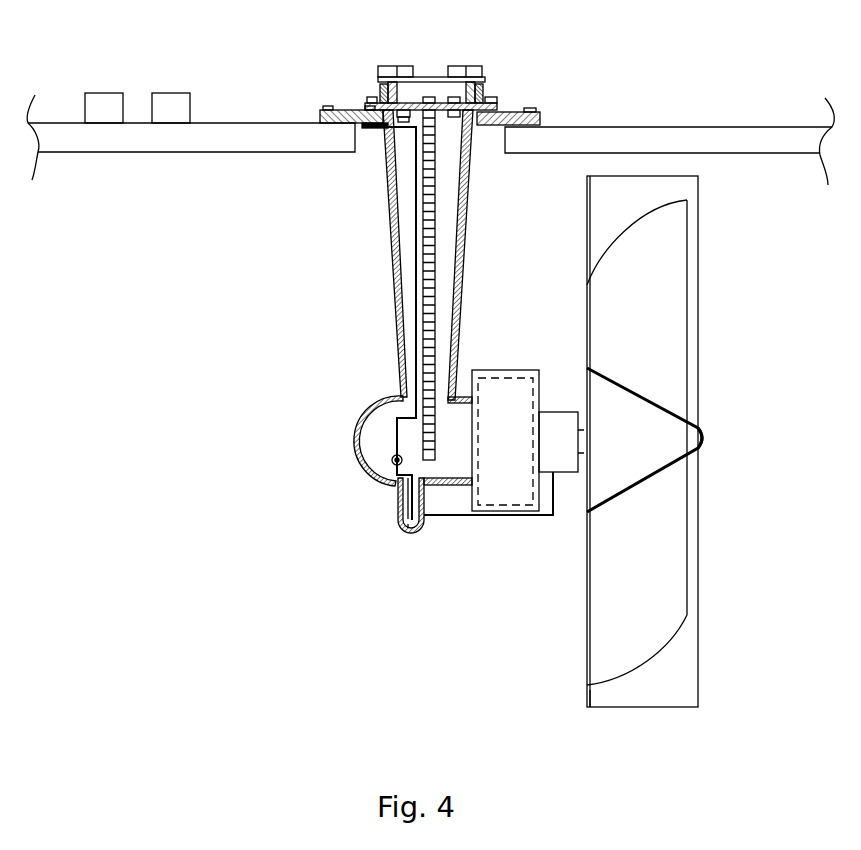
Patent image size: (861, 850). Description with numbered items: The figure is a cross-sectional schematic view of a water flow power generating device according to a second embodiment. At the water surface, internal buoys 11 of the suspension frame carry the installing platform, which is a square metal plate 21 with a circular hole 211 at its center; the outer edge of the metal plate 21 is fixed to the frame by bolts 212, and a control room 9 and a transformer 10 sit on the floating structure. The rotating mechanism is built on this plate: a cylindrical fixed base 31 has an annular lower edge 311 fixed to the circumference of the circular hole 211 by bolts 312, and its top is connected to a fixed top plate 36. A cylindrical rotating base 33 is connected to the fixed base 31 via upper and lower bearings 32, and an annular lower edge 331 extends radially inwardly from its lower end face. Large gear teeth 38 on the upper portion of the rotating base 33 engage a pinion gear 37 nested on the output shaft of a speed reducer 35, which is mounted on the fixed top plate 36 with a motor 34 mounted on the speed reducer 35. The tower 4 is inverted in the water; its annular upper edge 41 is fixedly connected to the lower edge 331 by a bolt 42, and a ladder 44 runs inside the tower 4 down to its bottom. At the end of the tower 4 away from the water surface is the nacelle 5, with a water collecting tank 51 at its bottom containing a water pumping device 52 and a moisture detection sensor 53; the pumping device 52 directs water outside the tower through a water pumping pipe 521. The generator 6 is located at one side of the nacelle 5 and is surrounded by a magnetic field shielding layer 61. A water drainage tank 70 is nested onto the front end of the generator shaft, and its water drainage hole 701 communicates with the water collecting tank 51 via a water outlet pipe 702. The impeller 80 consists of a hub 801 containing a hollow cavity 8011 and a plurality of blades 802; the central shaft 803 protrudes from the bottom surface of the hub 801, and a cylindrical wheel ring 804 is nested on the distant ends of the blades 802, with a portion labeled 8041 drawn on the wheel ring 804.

The control room 9 is at (98, 110).
The transformer 10 is at (172, 107).
The internal buoy 11 is at (292, 137).
The square metal plate 21 is at (328, 103).
The circular hole 211 is at (383, 128).
The bolt 212 is at (325, 110).
The fixed base 31 is at (380, 84).
The annular lower edge 311 is at (540, 121).
The bolt 312 is at (497, 106).
The bearing 32 is at (473, 115).
The rotating base 33 is at (392, 80).
The annular lower edge 331 is at (381, 90).
The motor 34 is at (403, 72).
The speed reducer 35 is at (472, 78).
The fixed top plate 36 is at (422, 78).
The pinion gear 37 is at (485, 82).
The large gear teeth 38 is at (480, 80).
The tower 4 is at (393, 182).
The annular upper edge 41 is at (387, 118).
The bolt 42 is at (402, 116).
The ladder 44 is at (428, 238).
The nacelle 5 is at (385, 442).
The water collecting tank 51 is at (408, 495).
The water pumping device 52 is at (393, 465).
The moisture detection sensor 53 is at (407, 530).
The water pumping pipe 521 is at (413, 279).
The generator 6 is at (493, 402).
The magnetic field shielding layer 61 is at (478, 370).
The water drainage tank 70 is at (550, 425).
The water drainage hole 701 is at (555, 474).
The water outlet pipe 702 is at (520, 517).
The impeller 80 is at (712, 605).
The hub 801 is at (648, 395).
The hollow cavity 8011 is at (650, 447).
The blade 802 is at (637, 278).
The central shaft 803 is at (582, 428).
The wheel ring 804 is at (668, 698).
The fan frame bottom wall 8041 is at (603, 693).